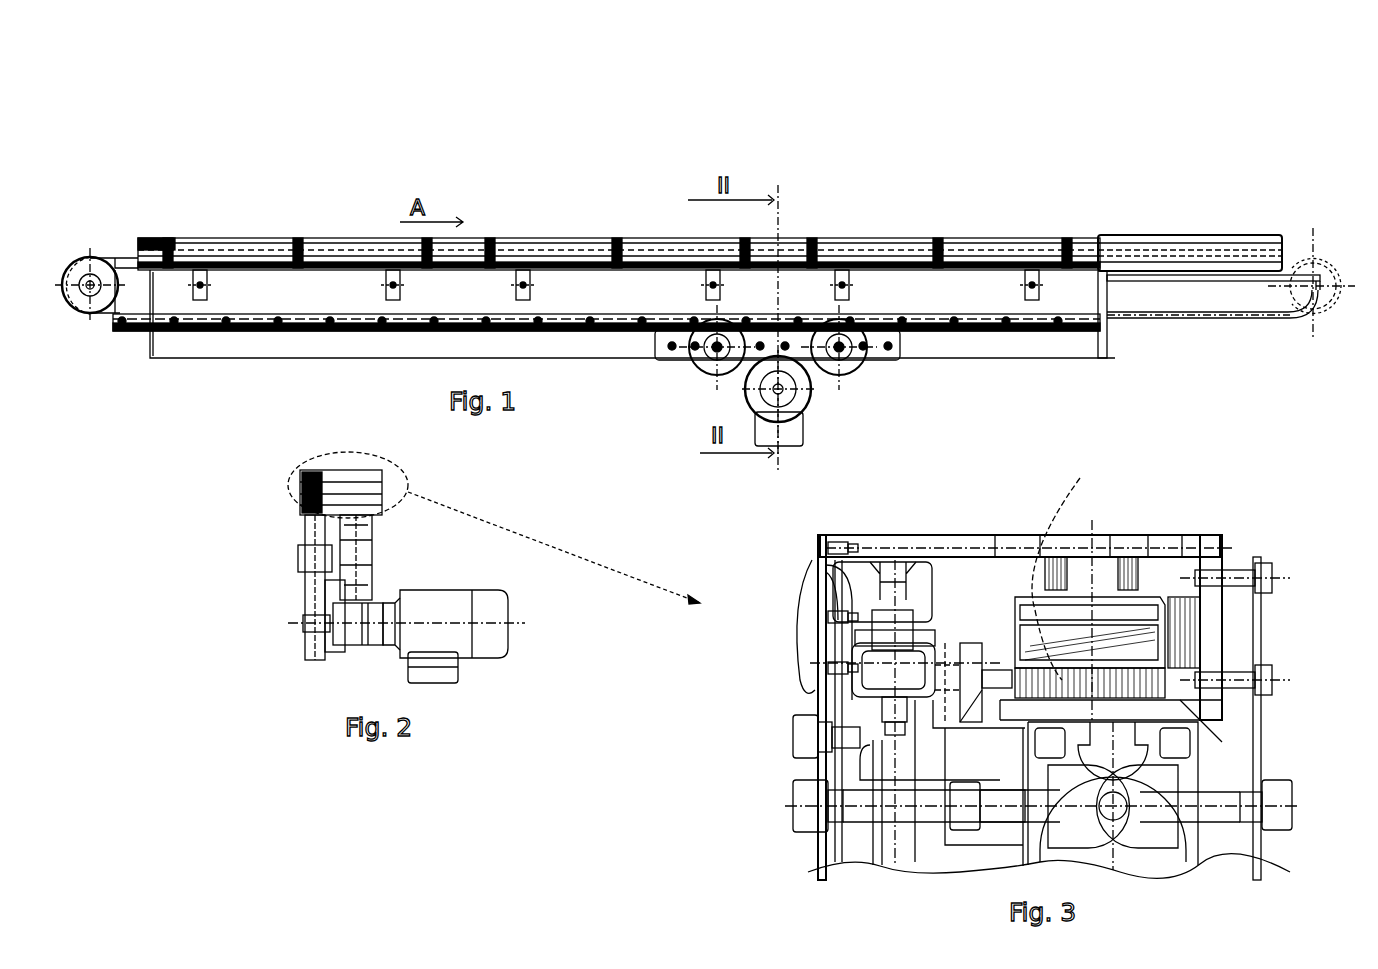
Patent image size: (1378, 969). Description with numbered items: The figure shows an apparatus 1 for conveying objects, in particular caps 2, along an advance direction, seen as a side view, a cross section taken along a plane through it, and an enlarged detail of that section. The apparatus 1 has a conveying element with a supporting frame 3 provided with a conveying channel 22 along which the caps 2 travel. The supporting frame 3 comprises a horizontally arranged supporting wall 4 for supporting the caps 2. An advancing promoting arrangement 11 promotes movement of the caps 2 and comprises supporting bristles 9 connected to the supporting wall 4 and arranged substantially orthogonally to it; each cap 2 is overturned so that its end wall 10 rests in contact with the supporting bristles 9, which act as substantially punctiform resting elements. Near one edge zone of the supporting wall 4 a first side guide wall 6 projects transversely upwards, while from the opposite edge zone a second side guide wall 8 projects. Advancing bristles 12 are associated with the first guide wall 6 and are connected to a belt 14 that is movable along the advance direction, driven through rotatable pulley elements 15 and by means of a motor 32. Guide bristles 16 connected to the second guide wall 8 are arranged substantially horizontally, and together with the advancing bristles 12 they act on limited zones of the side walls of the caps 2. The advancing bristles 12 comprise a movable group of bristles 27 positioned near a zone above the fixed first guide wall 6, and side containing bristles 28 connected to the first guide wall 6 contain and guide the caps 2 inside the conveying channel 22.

In FIG. 1, the apparatus 1 is at (616, 152).
In FIG. 1, the caps 2 is at (177, 224).
In FIG. 3, the caps 2 is at (1215, 620).
In FIG. 1, the supporting frame 3 is at (1065, 245).
In FIG. 1, the supporting wall 4 is at (270, 250).
In FIG. 3, the first side guide wall 6 is at (870, 660).
In FIG. 3, the second side guide wall 8 is at (1215, 672).
In FIG. 3, the supporting bristles 9 is at (1150, 680).
In FIG. 3, the end wall 10 is at (1065, 585).
In FIG. 1, the advancing promoting arrangement 11 is at (808, 220).
In FIG. 3, the advancing bristles 12 is at (992, 580).
In FIG. 3, the belt 14 is at (880, 628).
In FIG. 1, the rotatable pulley elements 15 is at (1318, 268).
In FIG. 3, the guide bristles 16 is at (1272, 590).
In FIG. 1, the conveying channel 22 is at (877, 252).
In FIG. 3, the conveying channel 22 is at (1165, 575).
In FIG. 3, the group of bristles 27 is at (968, 635).
In FIG. 3, the side containing bristles 28 is at (1018, 640).
In FIG. 1, the motor 32 is at (812, 416).
In FIG. 2, the motor 32 is at (458, 642).